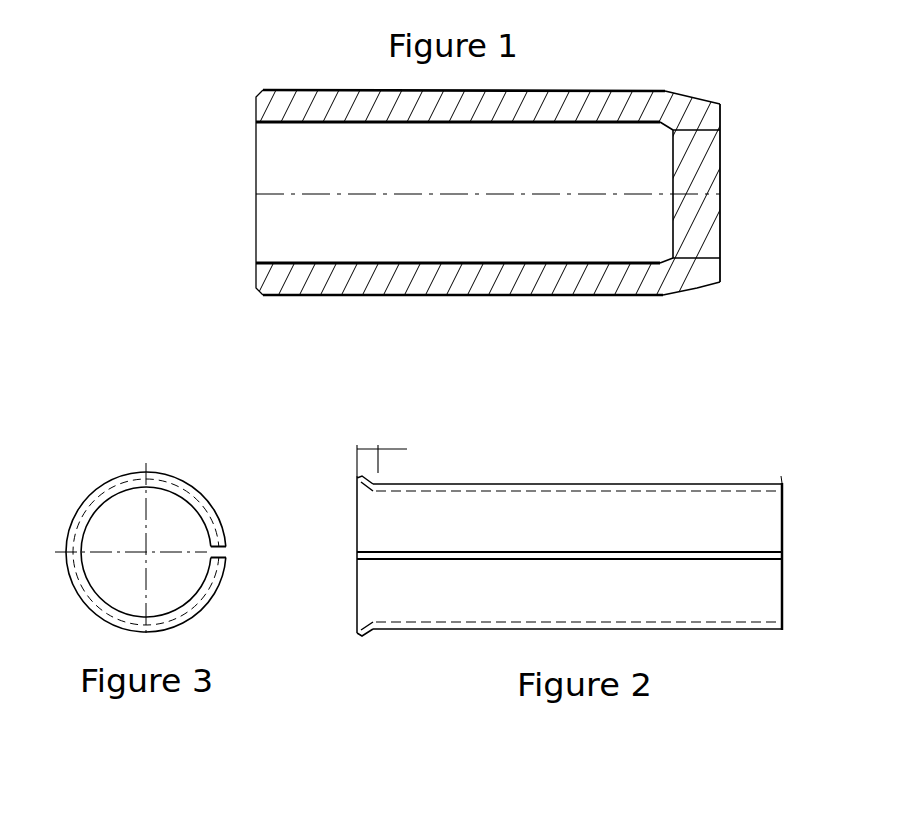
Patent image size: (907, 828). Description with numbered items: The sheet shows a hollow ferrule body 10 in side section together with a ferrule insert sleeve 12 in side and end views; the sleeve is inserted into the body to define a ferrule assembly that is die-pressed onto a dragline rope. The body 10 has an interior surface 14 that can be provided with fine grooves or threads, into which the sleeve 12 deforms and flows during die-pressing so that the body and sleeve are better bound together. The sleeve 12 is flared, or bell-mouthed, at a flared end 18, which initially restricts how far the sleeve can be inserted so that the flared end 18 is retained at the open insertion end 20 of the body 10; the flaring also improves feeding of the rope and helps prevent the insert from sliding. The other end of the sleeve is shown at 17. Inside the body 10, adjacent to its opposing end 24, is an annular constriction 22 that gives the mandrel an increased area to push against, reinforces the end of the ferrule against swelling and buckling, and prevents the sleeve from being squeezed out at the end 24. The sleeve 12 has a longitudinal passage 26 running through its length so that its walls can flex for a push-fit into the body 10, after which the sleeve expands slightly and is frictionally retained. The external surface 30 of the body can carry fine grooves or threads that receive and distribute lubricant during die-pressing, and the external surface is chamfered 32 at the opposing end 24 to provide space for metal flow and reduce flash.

In FIG. 1, the hollow ferrule body 10 is at (489, 187).
In FIG. 3, the ferrule insert sleeve 12 is at (85, 460).
In FIG. 1, the interior surface 14 is at (398, 125).
In FIG. 2, the second end of sleeve 17 is at (779, 660).
In FIG. 2, the flared end 18 is at (364, 648).
In FIG. 1, the open insertion end 20 is at (250, 273).
In FIG. 1, the annular constriction 22 is at (663, 137).
In FIG. 1, the opposing end 24 is at (733, 262).
In FIG. 2, the longitudinal passage 26 is at (586, 550).
In FIG. 3, the longitudinal passage 26 is at (232, 552).
In FIG. 1, the external surface 30 is at (594, 88).
In FIG. 1, the chamfer 32 is at (698, 298).